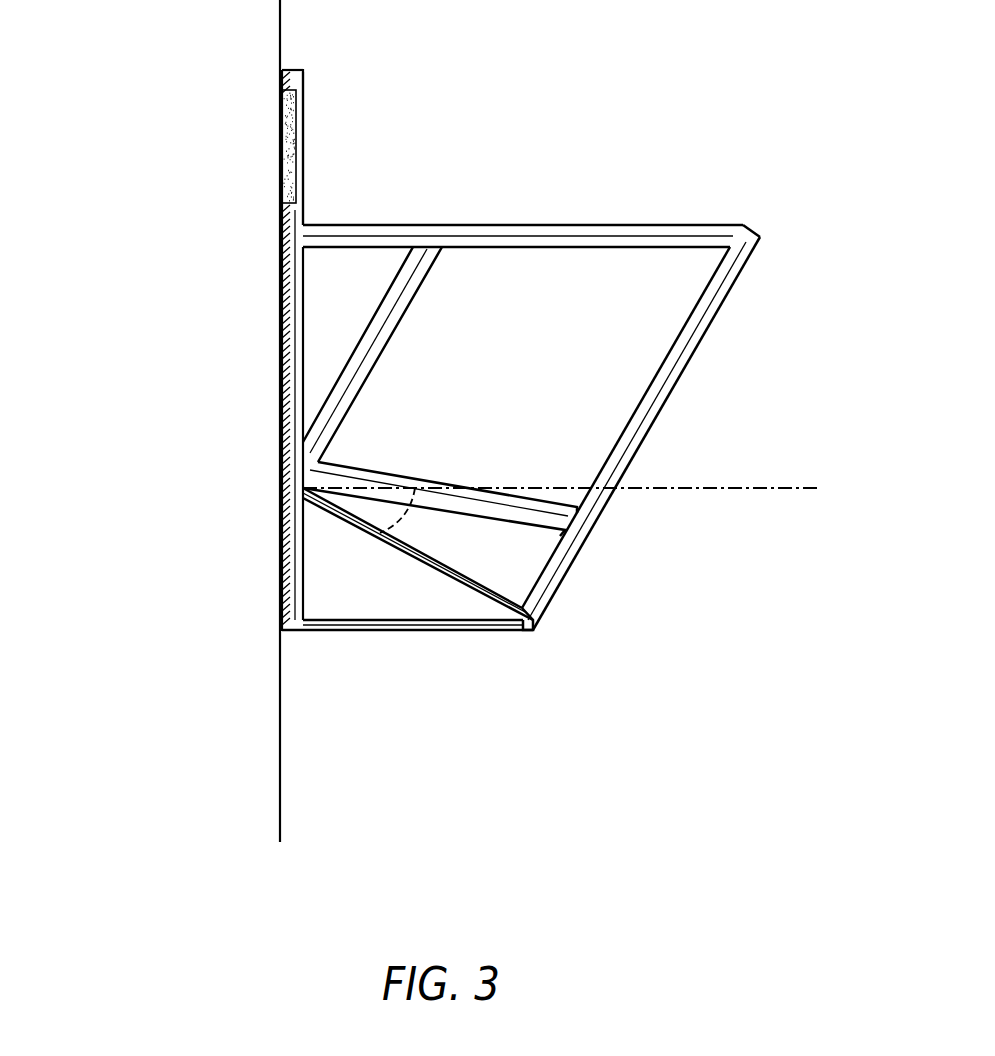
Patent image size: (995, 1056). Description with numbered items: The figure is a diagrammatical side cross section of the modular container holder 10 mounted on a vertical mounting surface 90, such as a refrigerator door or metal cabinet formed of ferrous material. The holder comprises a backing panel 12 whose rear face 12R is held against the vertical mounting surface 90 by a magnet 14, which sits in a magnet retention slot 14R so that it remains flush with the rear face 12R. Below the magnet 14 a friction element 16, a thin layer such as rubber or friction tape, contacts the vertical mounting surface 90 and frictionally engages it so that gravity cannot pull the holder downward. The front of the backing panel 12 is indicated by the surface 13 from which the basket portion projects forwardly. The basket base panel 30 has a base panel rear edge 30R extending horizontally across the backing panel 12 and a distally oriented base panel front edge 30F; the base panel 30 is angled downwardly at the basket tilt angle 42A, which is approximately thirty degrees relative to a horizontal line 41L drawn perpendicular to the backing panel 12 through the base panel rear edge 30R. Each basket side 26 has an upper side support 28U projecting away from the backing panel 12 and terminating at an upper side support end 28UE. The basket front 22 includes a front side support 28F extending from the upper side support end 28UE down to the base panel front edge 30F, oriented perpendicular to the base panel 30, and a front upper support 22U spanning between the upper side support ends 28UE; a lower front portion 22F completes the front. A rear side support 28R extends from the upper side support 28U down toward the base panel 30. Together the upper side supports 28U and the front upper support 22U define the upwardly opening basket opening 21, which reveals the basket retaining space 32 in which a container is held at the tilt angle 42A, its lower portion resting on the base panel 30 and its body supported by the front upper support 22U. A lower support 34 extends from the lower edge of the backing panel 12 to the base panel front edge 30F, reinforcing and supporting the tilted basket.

The modular container holder 10 is at (503, 700).
The backing panel 12 is at (303, 70).
The rear face 12R is at (282, 225).
The front face of wall bracket 13 is at (305, 105).
The magnet 14 is at (296, 135).
The magnet retention slot 14R is at (282, 165).
The friction element 16 is at (283, 70).
The basket opening 21 is at (548, 247).
The basket front 22 is at (748, 330).
The front upper support 22U is at (748, 267).
The front lower portion of frame side 22F is at (596, 526).
The basket sides 26 is at (505, 560).
The upper side support 28U is at (628, 236).
The upper side support end 28UE is at (755, 224).
The rear side supports 28R is at (385, 347).
The front side supports 28F is at (641, 400).
The basket base panel 30 is at (431, 564).
The base panel rear edge 30R is at (308, 498).
The base panel front edge 30F is at (528, 630).
The basket retaining space 32 is at (588, 437).
The lower support 34 is at (332, 630).
The horizontal line 41L is at (762, 490).
The basket tilt angle 42A is at (303, 494).
The vertical mounting surface 90 is at (281, 740).